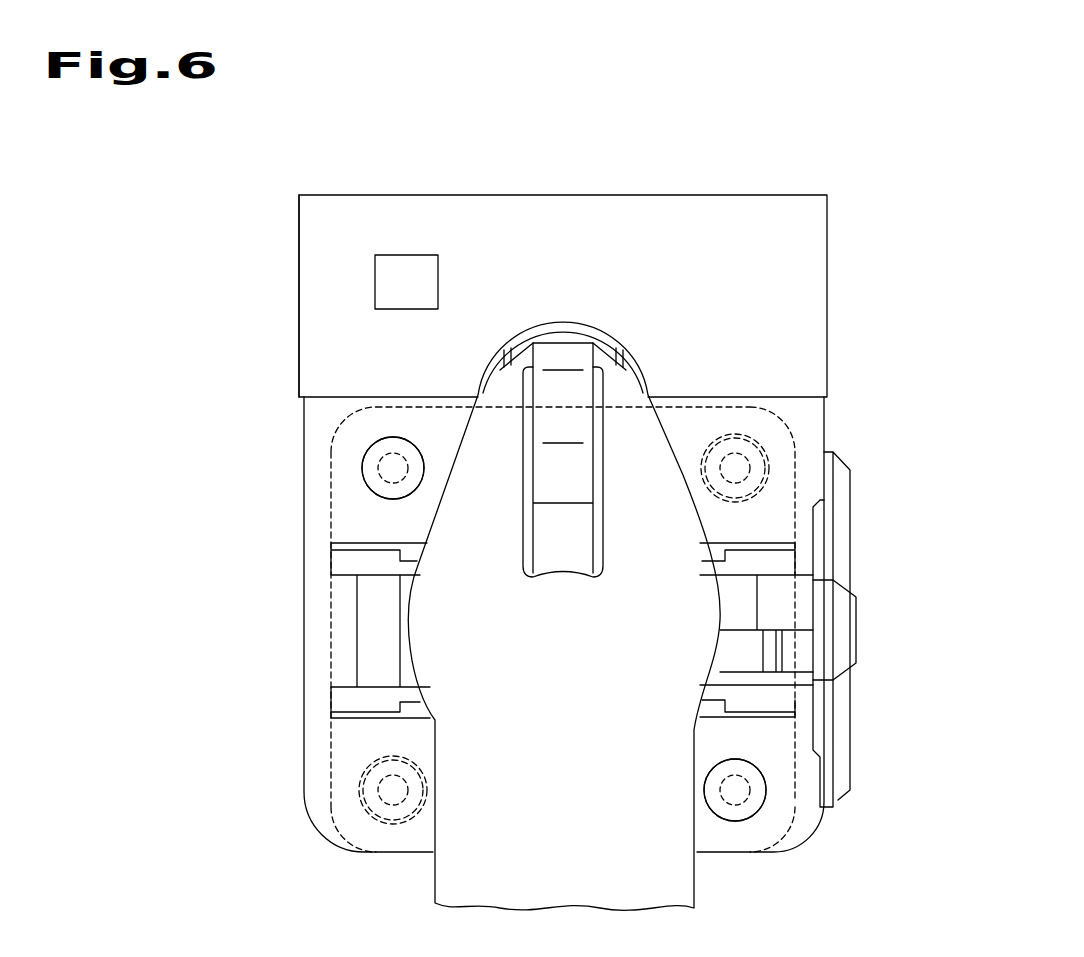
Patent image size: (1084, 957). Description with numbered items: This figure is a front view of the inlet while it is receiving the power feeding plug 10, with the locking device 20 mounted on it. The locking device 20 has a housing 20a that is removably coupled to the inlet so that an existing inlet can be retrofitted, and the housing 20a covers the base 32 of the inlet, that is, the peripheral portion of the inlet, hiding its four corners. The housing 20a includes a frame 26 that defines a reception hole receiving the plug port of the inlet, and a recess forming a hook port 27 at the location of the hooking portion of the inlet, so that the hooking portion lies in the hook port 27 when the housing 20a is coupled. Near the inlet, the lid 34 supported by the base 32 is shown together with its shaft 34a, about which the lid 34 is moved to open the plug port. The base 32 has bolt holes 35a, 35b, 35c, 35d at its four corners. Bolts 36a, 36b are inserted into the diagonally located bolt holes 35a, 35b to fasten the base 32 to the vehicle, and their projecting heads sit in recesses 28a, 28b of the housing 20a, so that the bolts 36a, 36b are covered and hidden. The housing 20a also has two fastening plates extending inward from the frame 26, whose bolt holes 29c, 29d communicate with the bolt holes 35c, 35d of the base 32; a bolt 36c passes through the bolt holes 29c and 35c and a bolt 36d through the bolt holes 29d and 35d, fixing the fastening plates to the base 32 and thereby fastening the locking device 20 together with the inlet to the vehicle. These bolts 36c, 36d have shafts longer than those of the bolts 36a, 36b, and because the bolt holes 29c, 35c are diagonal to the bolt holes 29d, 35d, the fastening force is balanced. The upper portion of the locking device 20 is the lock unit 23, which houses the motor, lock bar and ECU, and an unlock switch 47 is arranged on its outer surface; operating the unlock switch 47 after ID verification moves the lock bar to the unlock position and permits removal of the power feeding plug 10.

The power feeding plug 10 is at (694, 895).
The locking device 20 is at (690, 195).
The housing 20a is at (304, 656).
The lock unit 23 is at (300, 222).
The frame 26 is at (358, 547).
The hook port 27 is at (562, 330).
The recess 28a is at (752, 443).
The recess 28b is at (399, 824).
The bolt hole 29c is at (767, 792).
The bolt hole 29d is at (362, 467).
The base 32 is at (807, 833).
The lid 34 is at (853, 568).
The shaft 34a is at (783, 608).
The bolt hole 35a is at (760, 487).
The bolt hole 35b is at (372, 790).
The bolt hole 35c is at (740, 770).
The bolt hole 35d is at (366, 442).
The bolt 36a is at (752, 460).
The bolt 36b is at (376, 806).
The bolt 36c is at (743, 813).
The bolt 36d is at (380, 490).
The unlock switch 47 is at (375, 283).